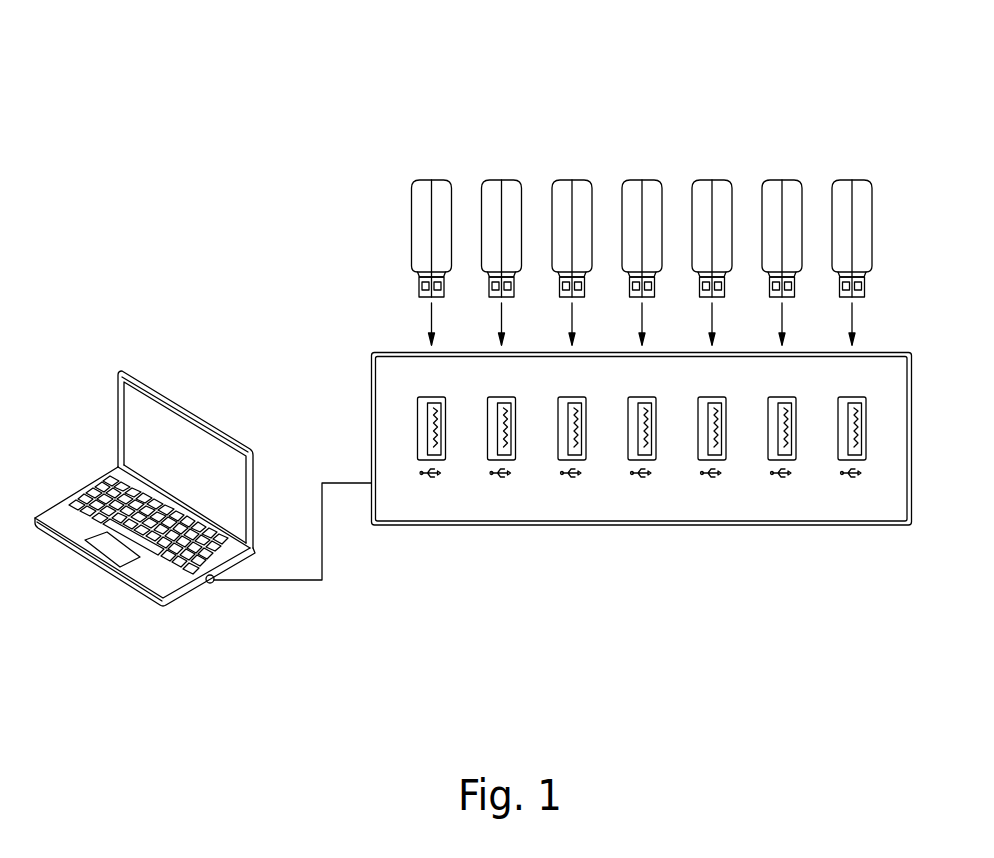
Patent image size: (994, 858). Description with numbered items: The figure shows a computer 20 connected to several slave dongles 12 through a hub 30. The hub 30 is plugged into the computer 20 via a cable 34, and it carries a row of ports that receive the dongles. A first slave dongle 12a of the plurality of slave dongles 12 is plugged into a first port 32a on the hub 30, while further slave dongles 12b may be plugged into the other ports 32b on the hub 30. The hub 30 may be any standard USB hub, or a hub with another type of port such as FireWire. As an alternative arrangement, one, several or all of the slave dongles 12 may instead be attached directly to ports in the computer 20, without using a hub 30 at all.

The slave dongles 12 is at (610, 181).
The first slave dongle 12a is at (398, 140).
The further slave dongle 12b is at (677, 222).
The computer 20 is at (163, 601).
The hub 30 is at (629, 489).
The first port 32a is at (430, 498).
The other port 32b is at (500, 498).
The cable 34 is at (297, 580).